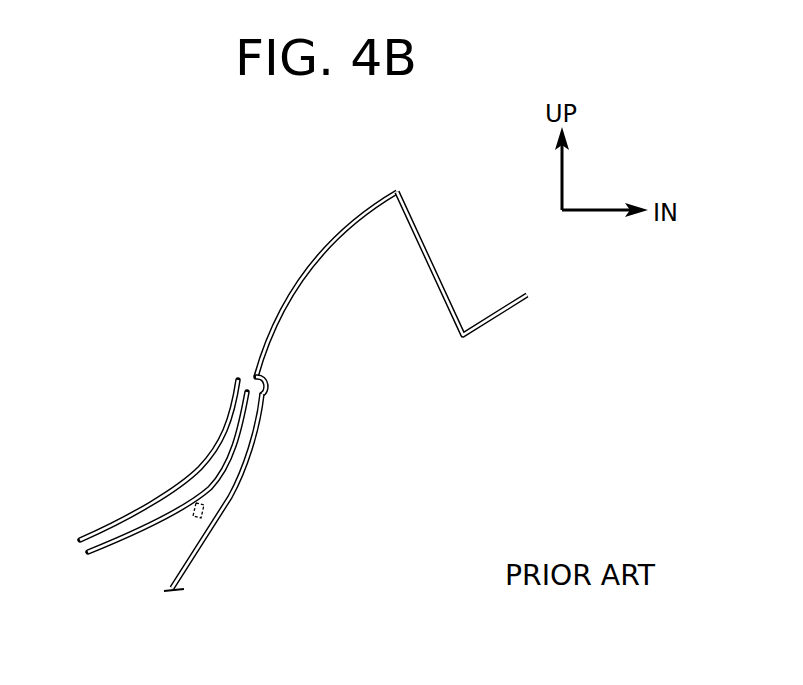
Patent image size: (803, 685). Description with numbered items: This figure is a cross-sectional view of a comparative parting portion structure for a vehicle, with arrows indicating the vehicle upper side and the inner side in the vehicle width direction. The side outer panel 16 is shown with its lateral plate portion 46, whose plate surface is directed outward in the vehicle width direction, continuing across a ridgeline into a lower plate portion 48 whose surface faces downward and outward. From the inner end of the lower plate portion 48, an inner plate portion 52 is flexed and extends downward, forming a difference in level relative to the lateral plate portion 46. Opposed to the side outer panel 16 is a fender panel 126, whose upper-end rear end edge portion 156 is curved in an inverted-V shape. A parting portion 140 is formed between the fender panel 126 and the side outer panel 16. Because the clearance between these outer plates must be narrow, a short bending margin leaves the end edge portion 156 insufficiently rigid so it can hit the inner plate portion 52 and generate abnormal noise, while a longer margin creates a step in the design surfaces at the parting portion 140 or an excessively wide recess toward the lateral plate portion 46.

The side outer panel 16 is at (389, 241).
The lateral plate portion 46 is at (327, 248).
The lower plate portion 48 is at (263, 378).
The inner plate portion 52 is at (253, 438).
The fender panel 126 is at (147, 528).
The parting portion 140 is at (251, 426).
The end edge portion 156 is at (263, 388).